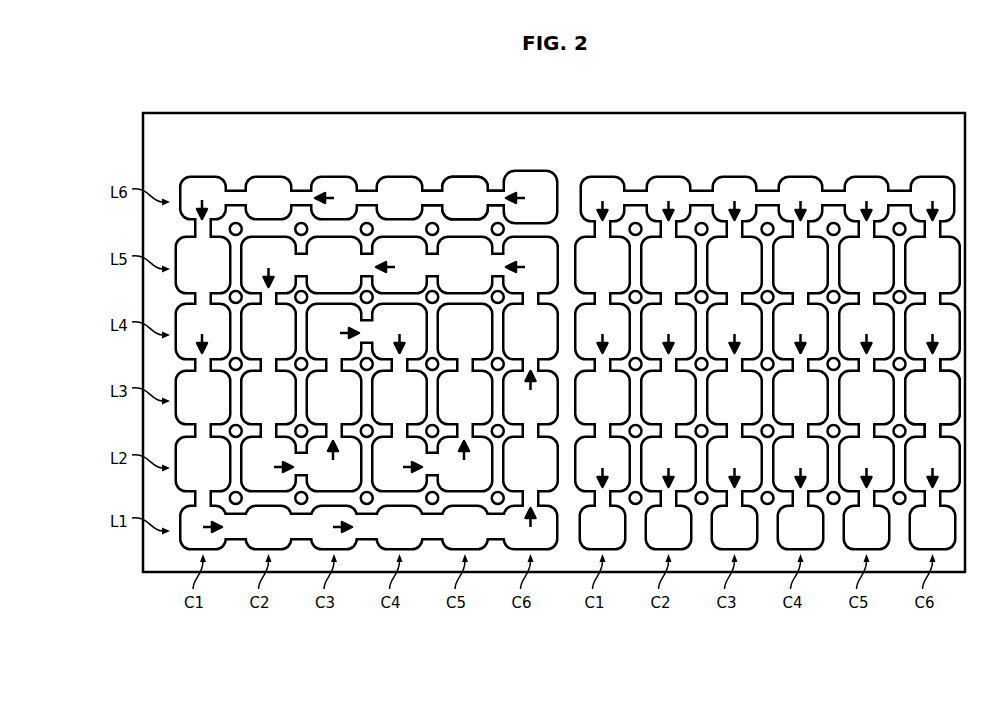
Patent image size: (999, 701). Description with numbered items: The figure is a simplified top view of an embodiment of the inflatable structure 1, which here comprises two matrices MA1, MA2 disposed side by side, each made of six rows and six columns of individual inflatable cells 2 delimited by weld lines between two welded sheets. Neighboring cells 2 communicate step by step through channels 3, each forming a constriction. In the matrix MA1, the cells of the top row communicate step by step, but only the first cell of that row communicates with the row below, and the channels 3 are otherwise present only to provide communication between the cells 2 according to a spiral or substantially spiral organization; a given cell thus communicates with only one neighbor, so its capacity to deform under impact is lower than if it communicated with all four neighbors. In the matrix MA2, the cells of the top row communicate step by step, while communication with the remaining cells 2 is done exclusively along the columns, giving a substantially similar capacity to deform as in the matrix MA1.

The structure 1 is at (76, 378).
The inflatable cell 2 is at (461, 197).
The channel 3 is at (427, 191).
The first matrix MA1 is at (360, 152).
The second matrix MA2 is at (778, 152).